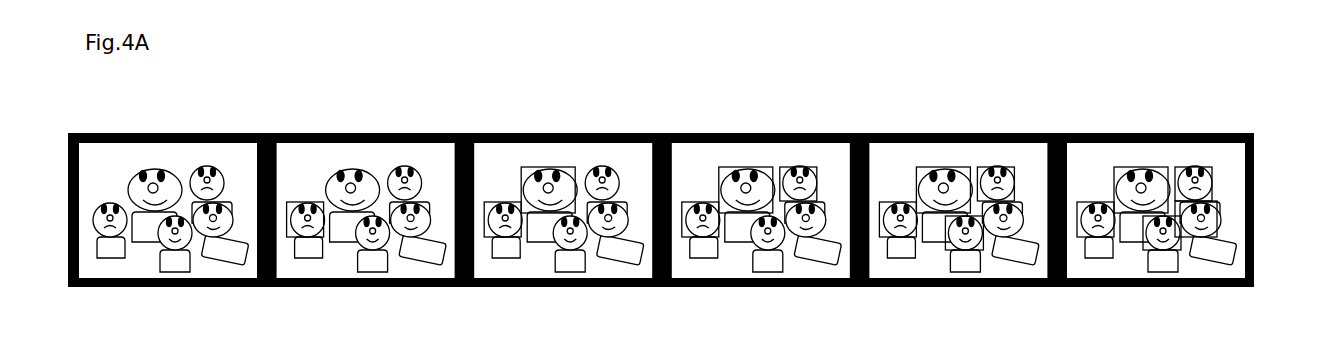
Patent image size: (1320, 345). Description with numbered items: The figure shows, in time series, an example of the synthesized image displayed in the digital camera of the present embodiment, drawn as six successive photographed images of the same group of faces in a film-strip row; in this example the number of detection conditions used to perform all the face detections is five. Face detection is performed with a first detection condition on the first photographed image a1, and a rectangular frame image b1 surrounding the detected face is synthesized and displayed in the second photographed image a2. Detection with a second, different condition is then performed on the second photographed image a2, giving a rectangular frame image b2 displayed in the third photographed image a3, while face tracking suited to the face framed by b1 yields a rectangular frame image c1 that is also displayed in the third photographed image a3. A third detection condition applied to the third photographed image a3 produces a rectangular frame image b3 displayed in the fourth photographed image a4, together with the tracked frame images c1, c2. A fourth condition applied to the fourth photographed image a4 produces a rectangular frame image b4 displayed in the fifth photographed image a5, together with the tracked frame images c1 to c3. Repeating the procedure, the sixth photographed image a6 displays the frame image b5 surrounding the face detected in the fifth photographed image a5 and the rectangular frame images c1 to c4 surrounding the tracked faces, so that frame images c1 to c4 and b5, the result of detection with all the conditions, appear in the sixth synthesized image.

The first photographed image a1 is at (107, 272).
The second photographed image a2 is at (298, 270).
The third photographed image a3 is at (510, 270).
The fourth photographed image a4 is at (702, 270).
The fifth photographed image a5 is at (897, 270).
The sixth photographed image a6 is at (1088, 270).
The rectangular frame image b1 is at (298, 202).
The rectangular frame image b2 is at (555, 167).
The rectangular frame image b3 is at (813, 167).
The rectangular frame image b4 is at (987, 250).
The frame image b5 is at (1217, 203).
The rectangular frame image c1 is at (497, 202).
The rectangular frame image c2 is at (747, 167).
The rectangular frame image c3 is at (1007, 167).
The rectangular frame image c4 is at (1180, 250).